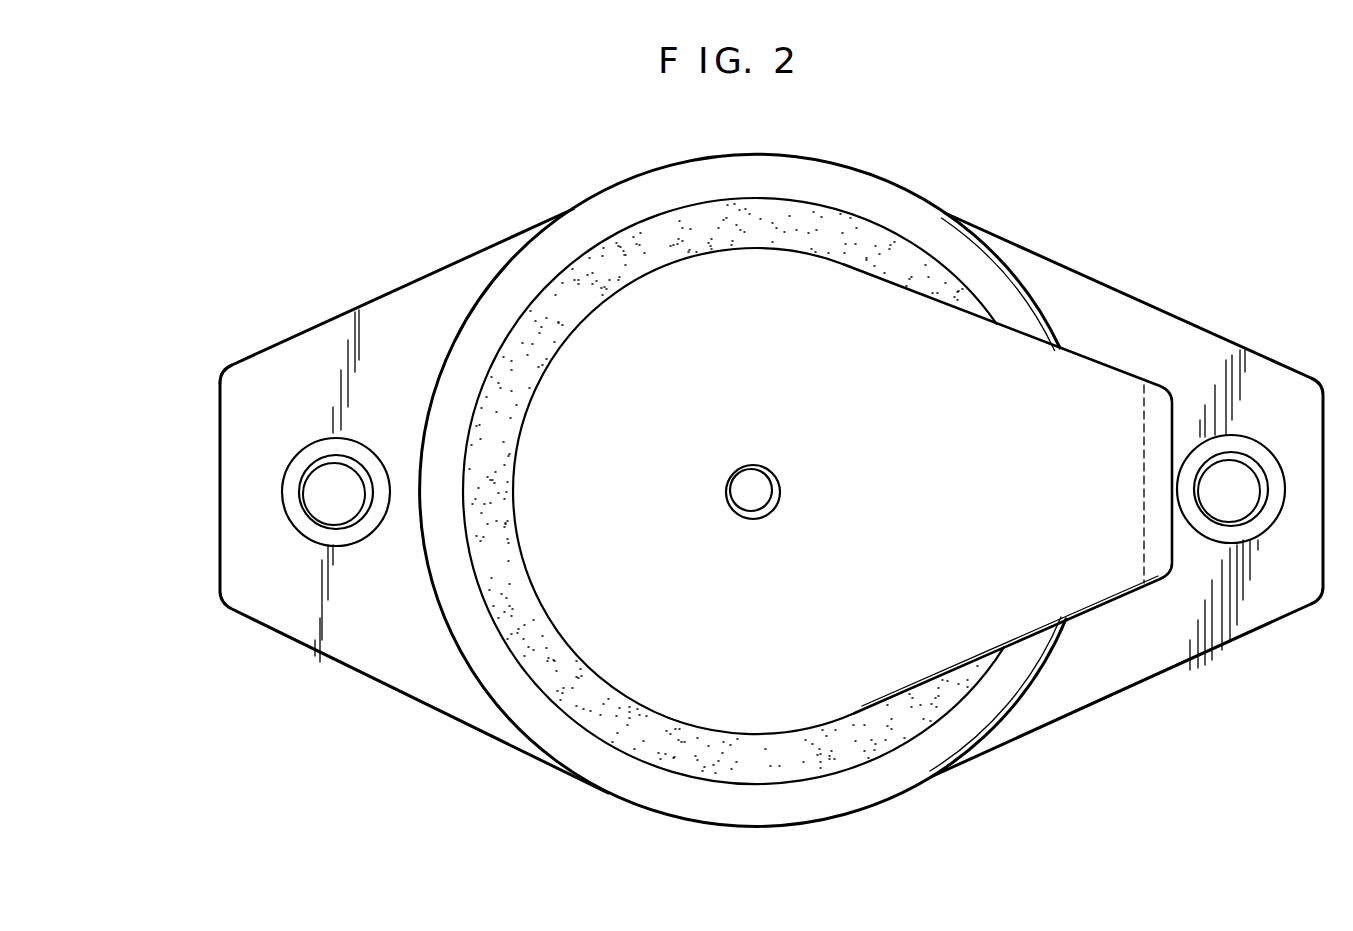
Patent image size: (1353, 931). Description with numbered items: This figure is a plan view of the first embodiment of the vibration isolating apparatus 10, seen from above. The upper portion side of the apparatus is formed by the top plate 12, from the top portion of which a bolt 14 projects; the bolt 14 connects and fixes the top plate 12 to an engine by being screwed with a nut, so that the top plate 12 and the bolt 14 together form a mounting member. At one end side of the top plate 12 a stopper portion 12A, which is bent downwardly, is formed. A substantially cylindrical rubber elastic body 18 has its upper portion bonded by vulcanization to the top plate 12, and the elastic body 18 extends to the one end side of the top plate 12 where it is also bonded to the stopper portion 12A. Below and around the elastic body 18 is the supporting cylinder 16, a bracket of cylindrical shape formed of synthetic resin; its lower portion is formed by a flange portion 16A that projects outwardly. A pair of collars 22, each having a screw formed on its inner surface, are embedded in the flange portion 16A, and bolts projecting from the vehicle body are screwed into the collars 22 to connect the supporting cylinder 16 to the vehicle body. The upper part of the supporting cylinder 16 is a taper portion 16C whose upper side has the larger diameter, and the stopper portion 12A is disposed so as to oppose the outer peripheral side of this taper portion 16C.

The vibration isolating apparatus 10 is at (998, 180).
The top plate 12 is at (808, 366).
The stopper portion 12A is at (1167, 390).
The bolt 14 is at (765, 488).
The supporting cylinder 16 is at (1035, 242).
The flange portion 16A is at (1105, 312).
The taper portion 16C is at (821, 190).
The rubber elastic body 18 is at (845, 233).
The collars 22 is at (367, 525).